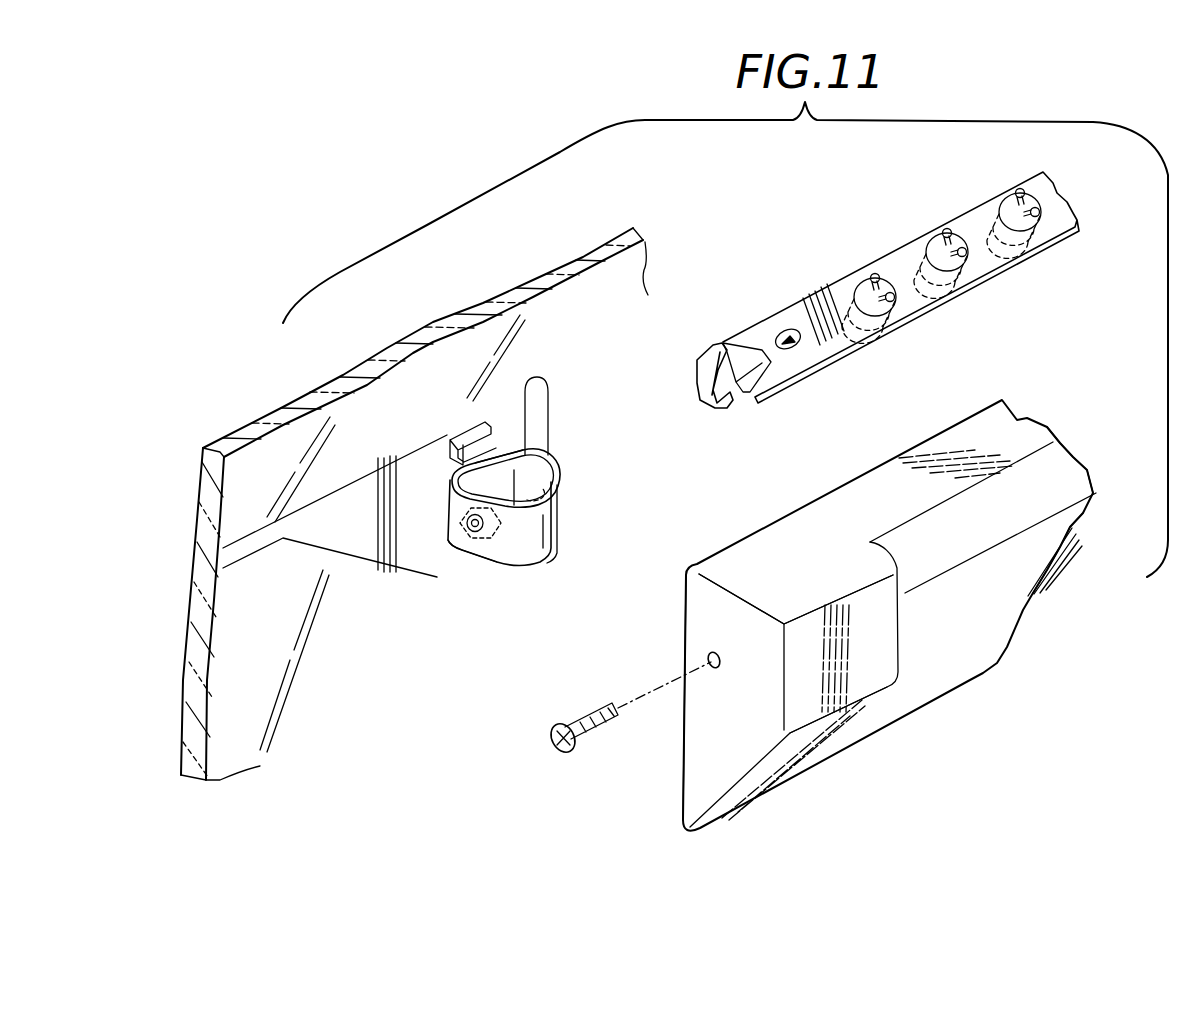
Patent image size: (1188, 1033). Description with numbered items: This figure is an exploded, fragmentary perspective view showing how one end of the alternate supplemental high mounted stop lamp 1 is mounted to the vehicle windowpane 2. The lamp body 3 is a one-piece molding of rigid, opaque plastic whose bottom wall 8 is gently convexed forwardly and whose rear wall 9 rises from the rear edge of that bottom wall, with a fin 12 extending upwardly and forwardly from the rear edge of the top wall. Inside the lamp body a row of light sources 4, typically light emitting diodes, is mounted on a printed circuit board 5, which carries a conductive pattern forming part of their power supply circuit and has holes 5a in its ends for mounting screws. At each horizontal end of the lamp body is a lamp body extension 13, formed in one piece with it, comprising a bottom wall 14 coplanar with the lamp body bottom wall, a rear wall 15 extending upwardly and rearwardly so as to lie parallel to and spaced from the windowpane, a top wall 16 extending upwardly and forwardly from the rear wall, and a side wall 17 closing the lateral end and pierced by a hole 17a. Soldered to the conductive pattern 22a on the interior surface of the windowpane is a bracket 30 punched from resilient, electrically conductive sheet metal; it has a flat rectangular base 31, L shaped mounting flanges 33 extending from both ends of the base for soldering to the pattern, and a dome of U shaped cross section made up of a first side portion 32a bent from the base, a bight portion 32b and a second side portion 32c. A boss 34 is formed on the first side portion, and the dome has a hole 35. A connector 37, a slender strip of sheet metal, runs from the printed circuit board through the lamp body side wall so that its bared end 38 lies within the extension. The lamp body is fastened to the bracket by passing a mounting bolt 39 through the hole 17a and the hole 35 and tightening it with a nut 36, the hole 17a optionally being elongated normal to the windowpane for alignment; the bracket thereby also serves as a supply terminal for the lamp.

The supplemental high mounted stop lamp 1 is at (1060, 653).
The windowpane 2 is at (510, 297).
The lamp body 3 is at (957, 677).
The light sources 4 is at (852, 312).
The printed circuit board 5 is at (917, 237).
The holes 5a is at (787, 333).
The bottom wall 8 is at (1028, 604).
The rear wall 9 is at (1066, 470).
The fin 12 is at (1021, 425).
The lamp body extension 13 is at (773, 786).
The bottom wall 14 is at (818, 756).
The rear wall 15 is at (870, 681).
The top wall 16 is at (799, 534).
The side wall 17 is at (690, 617).
The holes 17a is at (706, 657).
The conductive pattern 22a is at (533, 410).
The bracket 30 is at (558, 477).
The base 31 is at (514, 470).
The first side portion 32a is at (542, 456).
The bight portion 32b is at (553, 553).
The second side portion 32c is at (490, 553).
The mounting flanges 33 is at (473, 438).
The boss 34 is at (560, 487).
The hole 35 is at (470, 527).
The nut 36 is at (465, 506).
The connector 37 is at (743, 367).
The bared end 38 is at (707, 360).
The mounting bolt 39 is at (560, 727).